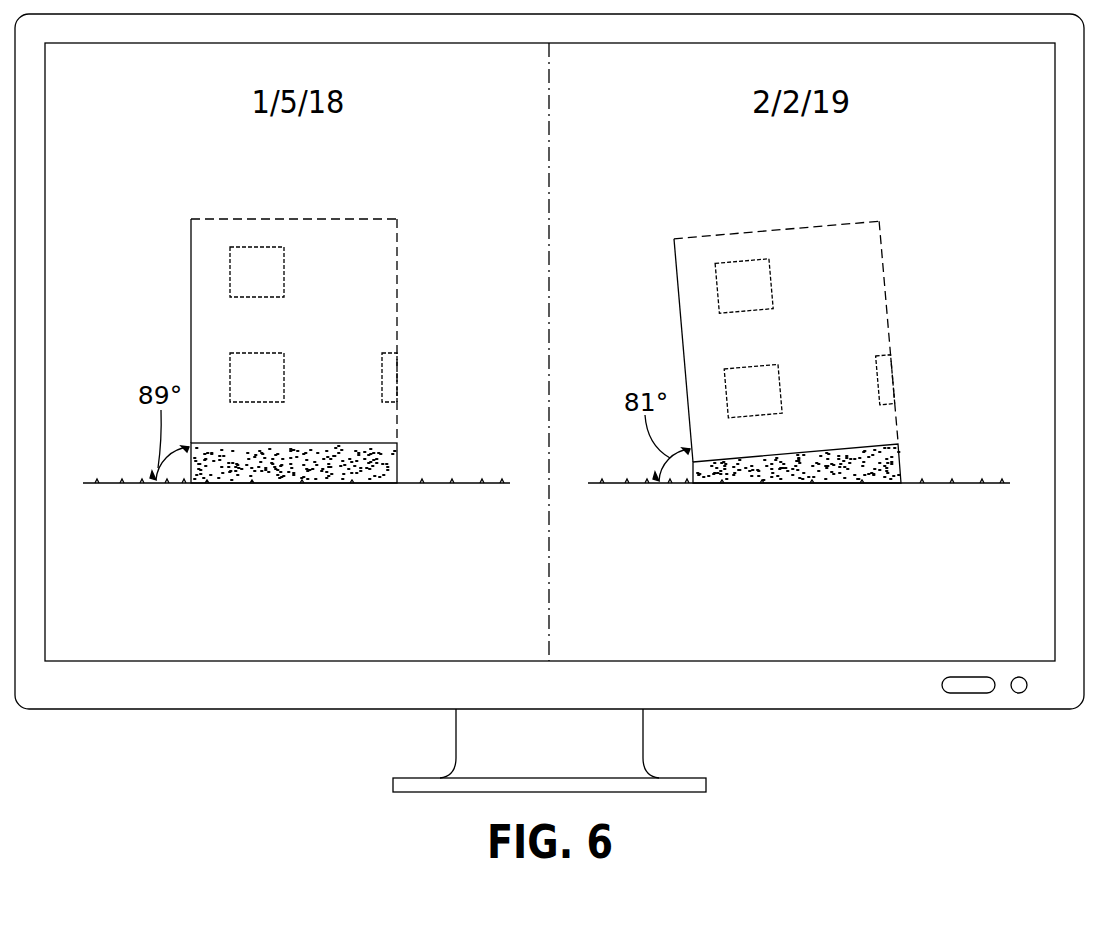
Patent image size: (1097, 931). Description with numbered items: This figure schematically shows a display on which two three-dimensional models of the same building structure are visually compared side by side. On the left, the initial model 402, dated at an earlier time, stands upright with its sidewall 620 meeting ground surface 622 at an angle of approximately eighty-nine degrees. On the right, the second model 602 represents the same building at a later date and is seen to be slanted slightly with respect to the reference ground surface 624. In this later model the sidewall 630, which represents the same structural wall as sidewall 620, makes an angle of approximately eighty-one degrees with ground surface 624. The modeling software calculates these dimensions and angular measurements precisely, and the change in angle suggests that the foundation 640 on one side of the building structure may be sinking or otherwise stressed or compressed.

The initial model 402 is at (208, 270).
The sidewall 620 is at (190, 323).
The ground surface 622 is at (112, 482).
The second model 602 is at (697, 287).
The sidewall 630 is at (680, 342).
The reference ground surface 624 is at (618, 481).
The foundation 640 is at (750, 474).